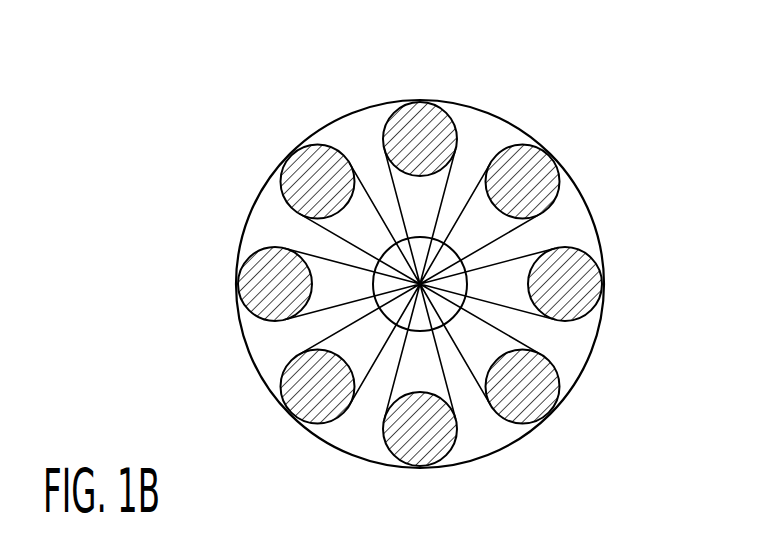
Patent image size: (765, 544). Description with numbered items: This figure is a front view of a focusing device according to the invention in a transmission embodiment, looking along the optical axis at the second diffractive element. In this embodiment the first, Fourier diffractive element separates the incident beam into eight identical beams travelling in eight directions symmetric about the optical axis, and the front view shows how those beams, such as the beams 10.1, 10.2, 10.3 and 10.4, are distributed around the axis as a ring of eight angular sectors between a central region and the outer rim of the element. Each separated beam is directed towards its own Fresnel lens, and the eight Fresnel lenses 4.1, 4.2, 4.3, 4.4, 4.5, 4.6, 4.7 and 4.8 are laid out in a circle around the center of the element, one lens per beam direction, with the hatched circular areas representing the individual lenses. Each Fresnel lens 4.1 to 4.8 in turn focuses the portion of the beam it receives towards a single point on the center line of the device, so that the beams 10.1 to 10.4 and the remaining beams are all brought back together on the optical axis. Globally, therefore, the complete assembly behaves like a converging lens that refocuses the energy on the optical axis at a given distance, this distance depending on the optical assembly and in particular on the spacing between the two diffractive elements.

The Fresnel lens 4.1 is at (435, 112).
The Fresnel lens 4.2 is at (300, 163).
The Fresnel lens 4.3 is at (247, 284).
The Fresnel lens 4.4 is at (288, 412).
The Fresnel lens 4.5 is at (435, 448).
The Fresnel lens 4.6 is at (545, 398).
The Fresnel lens 4.7 is at (590, 283).
The Fresnel lens 4.8 is at (545, 164).
The beam 10.1 is at (392, 177).
The beam 10.2 is at (327, 225).
The beam 10.3 is at (306, 318).
The beam 10.4 is at (358, 365).